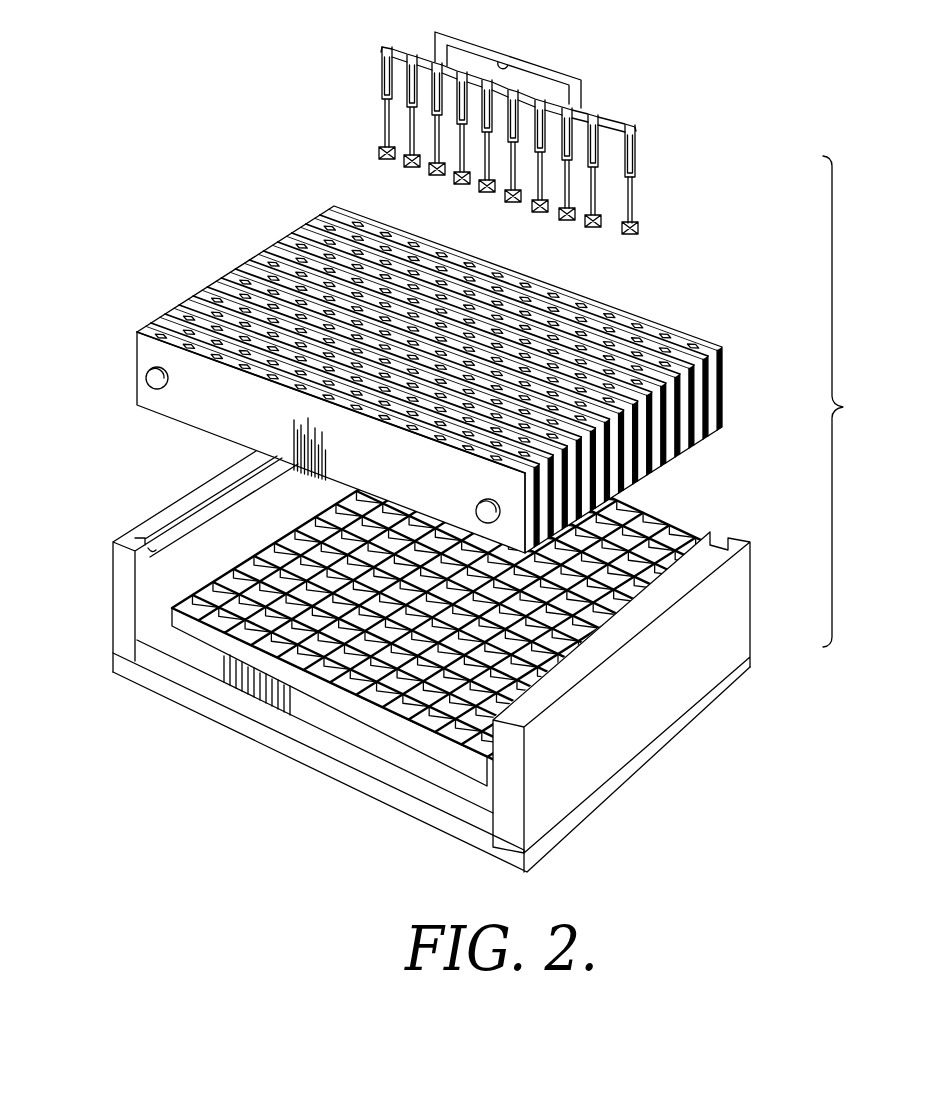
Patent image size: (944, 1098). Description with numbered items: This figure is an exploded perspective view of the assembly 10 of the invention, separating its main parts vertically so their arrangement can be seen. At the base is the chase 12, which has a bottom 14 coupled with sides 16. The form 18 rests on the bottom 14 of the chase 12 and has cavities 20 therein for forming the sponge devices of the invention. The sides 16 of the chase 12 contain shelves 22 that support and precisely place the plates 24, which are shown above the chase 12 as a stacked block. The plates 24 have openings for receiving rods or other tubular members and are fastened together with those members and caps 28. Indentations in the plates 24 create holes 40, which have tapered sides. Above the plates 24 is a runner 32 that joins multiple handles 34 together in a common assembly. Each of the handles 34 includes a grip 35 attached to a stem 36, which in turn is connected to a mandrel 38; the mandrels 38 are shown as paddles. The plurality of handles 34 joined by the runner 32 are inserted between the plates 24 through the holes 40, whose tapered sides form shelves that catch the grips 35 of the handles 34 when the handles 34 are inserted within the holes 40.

The assembly 10 is at (230, 93).
The chase 12 is at (763, 635).
The bottom 14 is at (463, 833).
The sides 16 is at (697, 680).
The form 18 is at (227, 658).
The cavities 20 is at (417, 710).
The shelves 22 is at (135, 578).
The plates 24 is at (270, 278).
The caps 28 is at (148, 378).
The runner 32 is at (414, 52).
The handles 34 is at (375, 81).
The grips 35 is at (634, 162).
The stems 36 is at (634, 198).
The mandrels 38 is at (639, 234).
The holes 40 is at (243, 327).